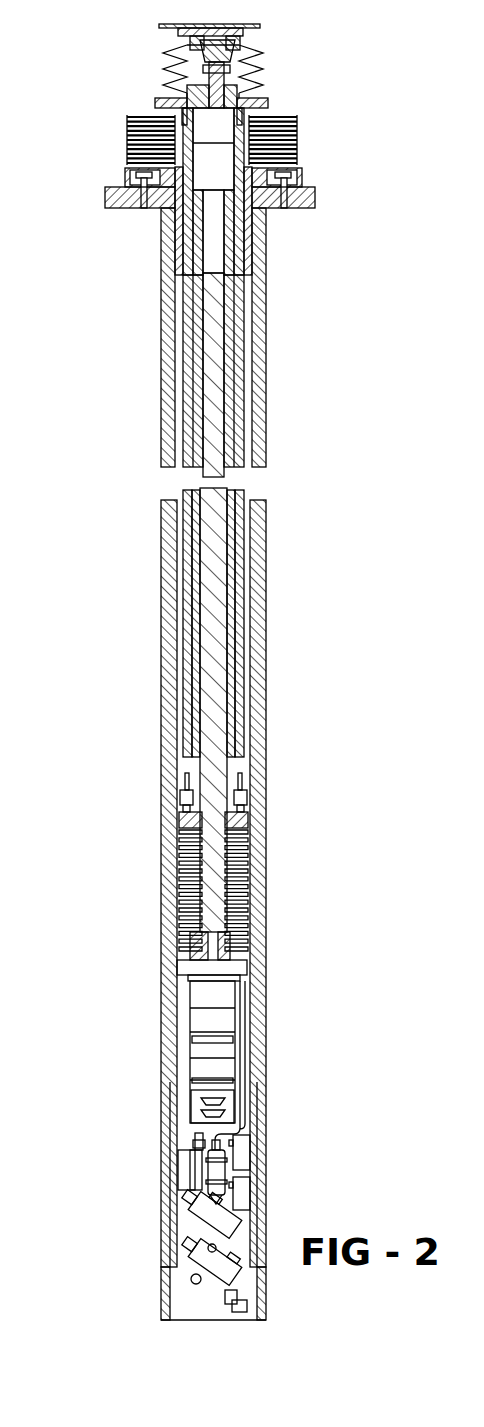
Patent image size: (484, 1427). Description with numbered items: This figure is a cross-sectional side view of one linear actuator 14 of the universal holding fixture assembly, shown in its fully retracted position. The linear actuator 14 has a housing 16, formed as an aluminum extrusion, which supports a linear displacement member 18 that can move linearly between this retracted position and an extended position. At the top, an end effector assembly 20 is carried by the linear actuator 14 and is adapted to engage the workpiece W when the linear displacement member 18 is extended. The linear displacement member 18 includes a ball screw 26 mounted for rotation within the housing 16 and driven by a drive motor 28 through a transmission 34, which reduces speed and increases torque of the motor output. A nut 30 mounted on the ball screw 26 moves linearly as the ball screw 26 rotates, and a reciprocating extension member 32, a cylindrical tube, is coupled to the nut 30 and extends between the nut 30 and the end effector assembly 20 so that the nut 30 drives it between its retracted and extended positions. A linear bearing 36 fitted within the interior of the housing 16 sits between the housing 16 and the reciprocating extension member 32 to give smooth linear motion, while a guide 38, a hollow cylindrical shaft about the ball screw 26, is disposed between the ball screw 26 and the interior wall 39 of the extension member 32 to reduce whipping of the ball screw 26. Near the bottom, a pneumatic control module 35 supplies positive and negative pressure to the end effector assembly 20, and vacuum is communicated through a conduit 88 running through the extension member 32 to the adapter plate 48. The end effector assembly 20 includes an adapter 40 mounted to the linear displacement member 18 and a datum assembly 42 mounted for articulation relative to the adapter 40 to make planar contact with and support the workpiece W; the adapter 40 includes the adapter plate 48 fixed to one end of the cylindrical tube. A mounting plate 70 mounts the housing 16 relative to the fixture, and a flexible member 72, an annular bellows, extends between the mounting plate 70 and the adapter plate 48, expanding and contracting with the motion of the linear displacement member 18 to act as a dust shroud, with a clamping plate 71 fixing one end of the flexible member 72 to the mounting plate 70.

The workpiece W is at (200, 24).
The linear actuator 14 is at (98, 294).
The housing 16 is at (162, 606).
The linear displacement member 18 is at (246, 541).
The end effector assembly 20 is at (286, 57).
The ball screw 26 is at (215, 606).
The drive motor 28 is at (196, 1112).
The nut 30 is at (243, 795).
The reciprocating extension member 32 is at (188, 532).
The transmission 34 is at (188, 1029).
The pneumatic control module 35 is at (152, 1221).
The linear bearing 36 is at (252, 218).
The guide 38 is at (230, 698).
The interior wall 39 is at (198, 677).
The adapter 40 is at (170, 96).
The datum assembly 42 is at (166, 46).
The adapter plate 48 is at (268, 100).
The mounting plate 70 is at (112, 208).
The clamping plate 71 is at (300, 182).
The flexible member 72 is at (294, 128).
The conduit 88 is at (177, 868).